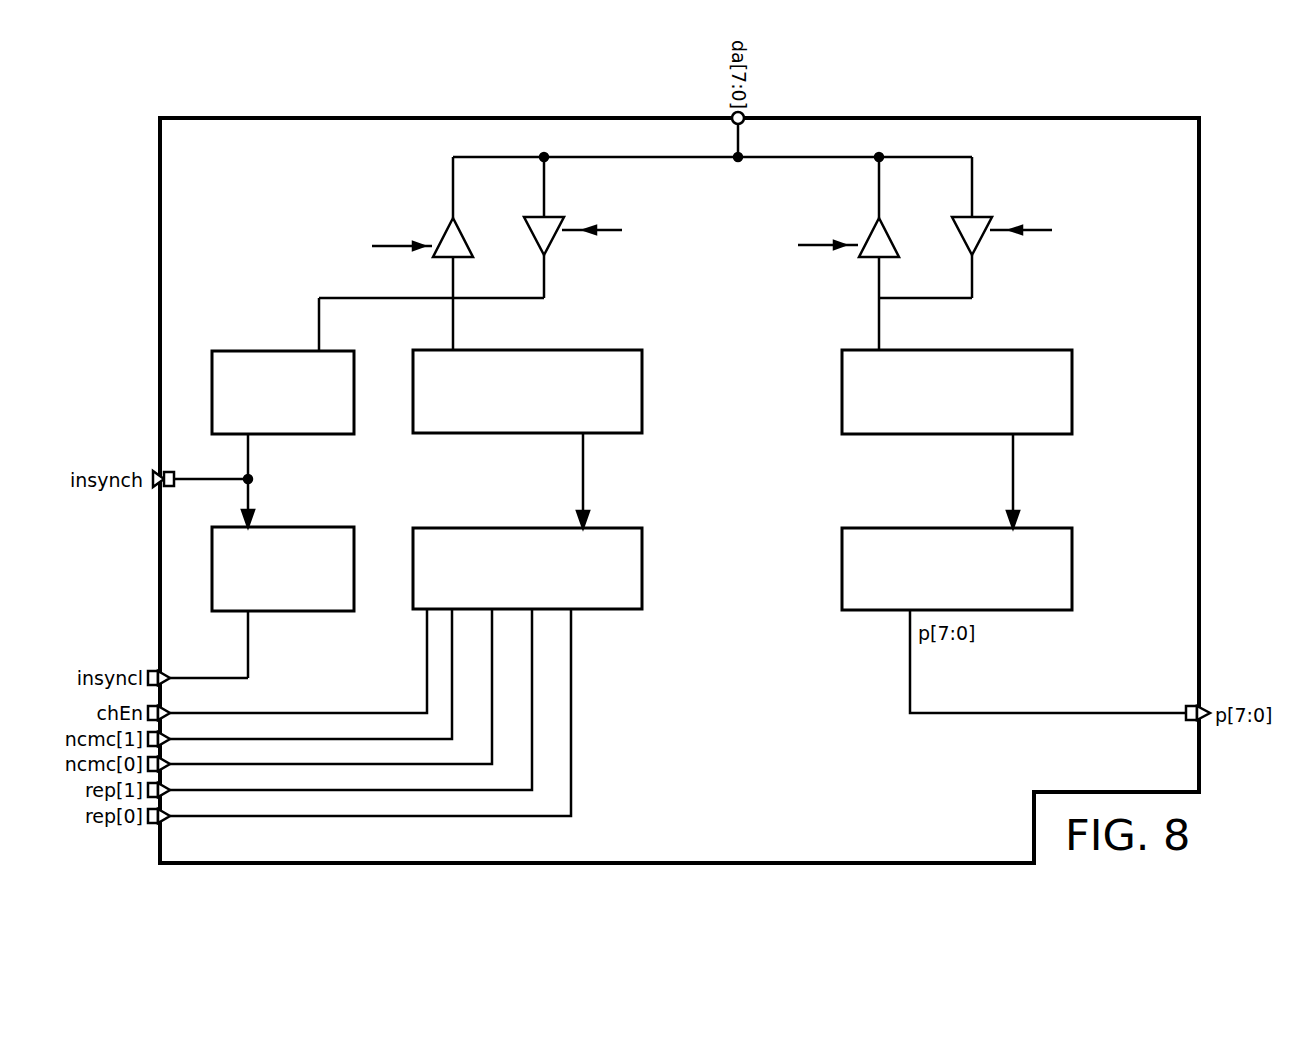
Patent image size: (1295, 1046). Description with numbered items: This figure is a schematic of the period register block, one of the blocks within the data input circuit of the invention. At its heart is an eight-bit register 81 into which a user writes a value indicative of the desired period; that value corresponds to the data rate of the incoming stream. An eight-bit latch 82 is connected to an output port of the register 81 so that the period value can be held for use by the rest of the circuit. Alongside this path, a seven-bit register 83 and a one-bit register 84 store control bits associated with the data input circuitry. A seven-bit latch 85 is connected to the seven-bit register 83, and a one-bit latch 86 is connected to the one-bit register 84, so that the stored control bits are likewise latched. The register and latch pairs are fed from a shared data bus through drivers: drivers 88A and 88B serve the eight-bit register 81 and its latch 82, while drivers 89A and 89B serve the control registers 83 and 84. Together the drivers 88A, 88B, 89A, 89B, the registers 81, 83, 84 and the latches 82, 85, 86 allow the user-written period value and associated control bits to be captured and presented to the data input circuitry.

The 8-bit register 81 is at (1040, 350).
The 8-bit latch 82 is at (905, 528).
The 7-bit register 83 is at (597, 350).
The 1-bit register 84 is at (354, 398).
The 7-bit latch 85 is at (476, 528).
The 1-bit latch 86 is at (312, 527).
The driver 88A is at (890, 238).
The driver 88B is at (973, 218).
The driver 89A is at (466, 239).
The driver 89B is at (544, 218).